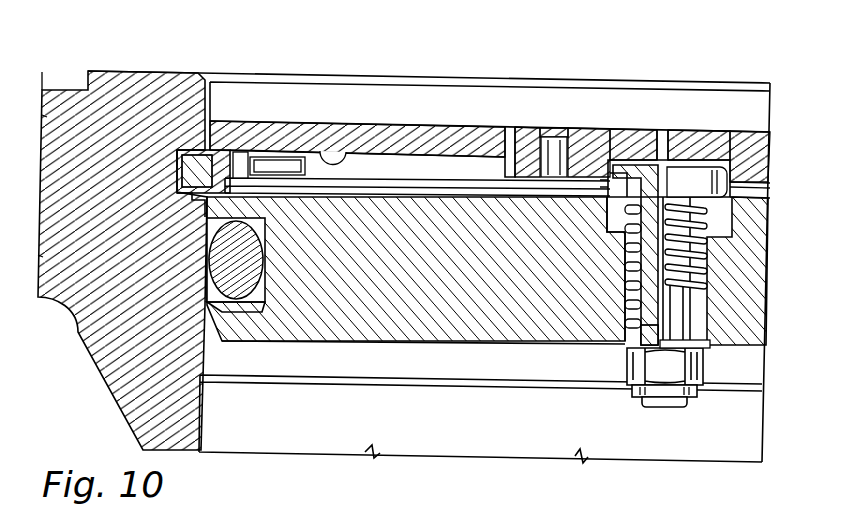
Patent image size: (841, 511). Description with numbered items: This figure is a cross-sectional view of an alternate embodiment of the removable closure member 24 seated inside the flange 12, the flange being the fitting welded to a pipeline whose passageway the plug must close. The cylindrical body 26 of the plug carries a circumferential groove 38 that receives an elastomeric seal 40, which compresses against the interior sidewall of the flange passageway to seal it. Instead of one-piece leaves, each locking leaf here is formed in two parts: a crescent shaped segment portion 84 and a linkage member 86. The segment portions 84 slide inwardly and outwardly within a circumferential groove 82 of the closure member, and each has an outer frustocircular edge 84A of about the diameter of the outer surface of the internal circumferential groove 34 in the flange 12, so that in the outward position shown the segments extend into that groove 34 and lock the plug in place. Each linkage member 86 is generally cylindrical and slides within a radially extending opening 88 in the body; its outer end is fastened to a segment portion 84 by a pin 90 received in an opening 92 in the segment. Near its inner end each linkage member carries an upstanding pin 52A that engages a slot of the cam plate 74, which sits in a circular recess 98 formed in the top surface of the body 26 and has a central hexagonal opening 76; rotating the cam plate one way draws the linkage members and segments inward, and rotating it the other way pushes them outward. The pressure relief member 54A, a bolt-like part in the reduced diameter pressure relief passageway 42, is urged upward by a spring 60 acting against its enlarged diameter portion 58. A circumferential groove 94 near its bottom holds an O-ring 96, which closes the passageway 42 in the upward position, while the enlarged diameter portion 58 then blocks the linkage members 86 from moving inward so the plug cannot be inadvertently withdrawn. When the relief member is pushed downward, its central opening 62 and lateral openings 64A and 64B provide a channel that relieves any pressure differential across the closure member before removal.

The flange 12 is at (81, 108).
The closure member 24 is at (683, 49).
The cylindrical body 26 is at (402, 330).
The internal circumferential groove 34 is at (192, 214).
The circumferential groove 38 is at (207, 301).
The elastomeric seal 40 is at (233, 248).
The pressure relief passageway 42 is at (635, 288).
The upstanding pin 52A is at (555, 140).
The pressure relief member 54A is at (692, 302).
The enlarged diameter portion 58 is at (742, 134).
The spring 60 is at (625, 268).
The central opening 62 is at (640, 306).
The lateral opening 64A is at (640, 316).
The lateral opening 64B is at (622, 210).
The cam plate 74 is at (601, 157).
The central hexagonal opening 76 is at (678, 160).
The circumferential groove 82 is at (189, 150).
The crescent shaped segment portion 84 is at (193, 173).
The outer frustocircular edge 84A is at (176, 160).
The linkage member 86 is at (366, 172).
The radially extending opening 88 is at (328, 151).
The pin 90 is at (243, 157).
The opening 92 is at (240, 152).
The circumferential groove 94 is at (641, 333).
The O-ring 96 is at (692, 344).
The circular recess 98 is at (509, 126).